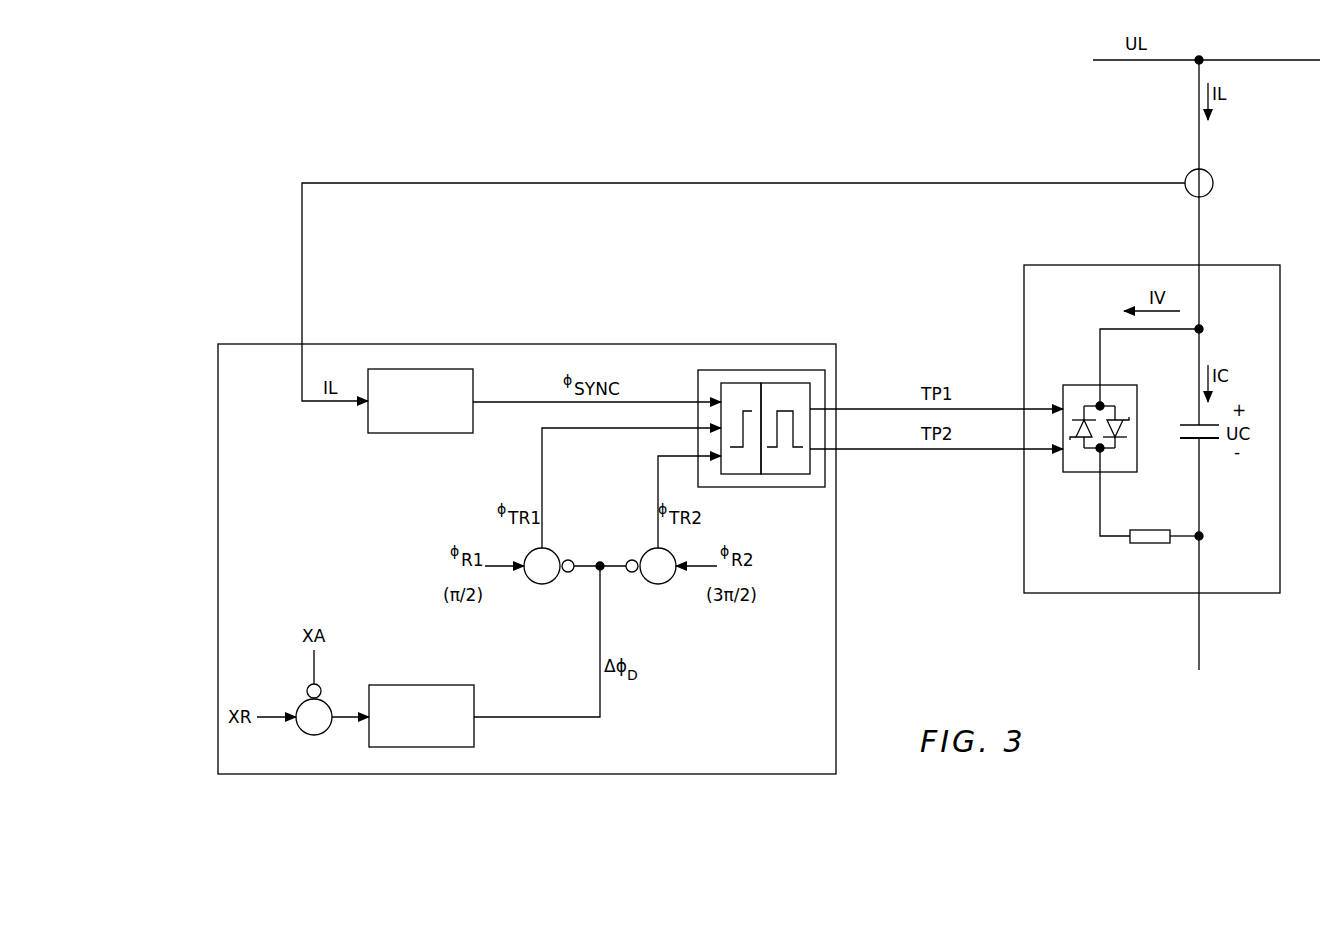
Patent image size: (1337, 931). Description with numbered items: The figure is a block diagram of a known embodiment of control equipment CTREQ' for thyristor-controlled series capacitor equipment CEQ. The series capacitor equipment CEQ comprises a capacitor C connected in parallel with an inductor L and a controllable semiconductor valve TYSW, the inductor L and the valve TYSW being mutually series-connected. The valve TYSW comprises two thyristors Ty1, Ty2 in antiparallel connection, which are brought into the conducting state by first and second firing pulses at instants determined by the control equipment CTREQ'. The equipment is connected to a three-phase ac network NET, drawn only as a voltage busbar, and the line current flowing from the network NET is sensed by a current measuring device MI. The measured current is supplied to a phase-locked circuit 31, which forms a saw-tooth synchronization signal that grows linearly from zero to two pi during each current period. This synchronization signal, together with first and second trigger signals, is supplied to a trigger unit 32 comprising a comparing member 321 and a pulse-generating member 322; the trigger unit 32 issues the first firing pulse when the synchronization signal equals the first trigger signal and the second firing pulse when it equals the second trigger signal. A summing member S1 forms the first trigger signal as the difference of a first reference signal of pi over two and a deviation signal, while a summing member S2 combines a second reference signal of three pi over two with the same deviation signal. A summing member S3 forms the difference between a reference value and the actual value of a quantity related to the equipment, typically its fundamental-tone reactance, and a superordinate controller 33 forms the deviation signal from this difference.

The phase-locked circuit 31 is at (418, 433).
The trigger unit 32 is at (761, 428).
The comparing member 321 is at (739, 383).
The pulse-generating member 322 is at (794, 383).
The superordinate controller 33 is at (395, 748).
The summing member S1 is at (543, 584).
The summing member S2 is at (659, 584).
The summing member S3 is at (330, 702).
The control equipment CTREQ' is at (566, 577).
The series capacitor equipment CEQ is at (1083, 594).
The controllable semiconductor valve TYSW is at (1112, 436).
The thyristor Ty1 is at (1091, 404).
The thyristor Ty2 is at (1121, 421).
The inductor L is at (1150, 545).
The capacitor C is at (1189, 443).
The current measuring device MI is at (1205, 195).
The three-phase ac network NET is at (1284, 62).